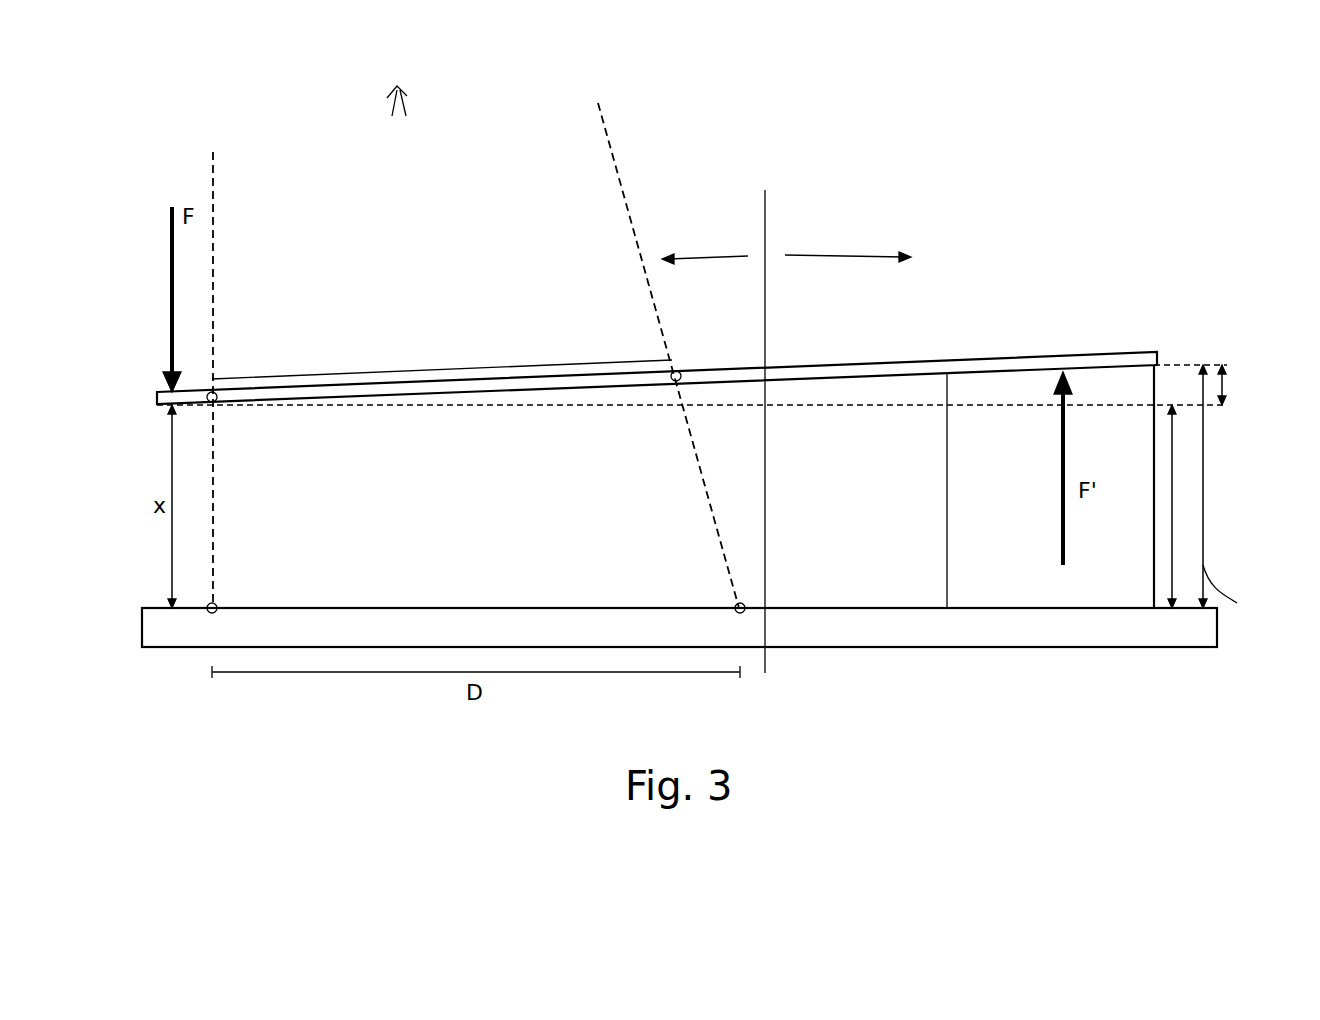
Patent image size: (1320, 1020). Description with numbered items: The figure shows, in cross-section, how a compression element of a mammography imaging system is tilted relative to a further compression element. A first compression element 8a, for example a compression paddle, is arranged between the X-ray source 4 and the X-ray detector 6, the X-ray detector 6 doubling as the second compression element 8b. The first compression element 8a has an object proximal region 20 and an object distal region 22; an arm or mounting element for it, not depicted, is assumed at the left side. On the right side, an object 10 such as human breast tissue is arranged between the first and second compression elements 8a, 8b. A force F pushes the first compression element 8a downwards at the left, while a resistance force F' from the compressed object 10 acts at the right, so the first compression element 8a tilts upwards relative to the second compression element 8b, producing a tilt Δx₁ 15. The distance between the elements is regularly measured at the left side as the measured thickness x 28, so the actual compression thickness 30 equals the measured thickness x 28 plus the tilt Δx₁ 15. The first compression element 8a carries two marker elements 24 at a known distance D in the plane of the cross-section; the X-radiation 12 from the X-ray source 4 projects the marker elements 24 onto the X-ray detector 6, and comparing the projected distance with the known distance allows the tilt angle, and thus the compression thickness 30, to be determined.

The X-ray source 4 is at (397, 116).
The X-ray detector 6 is at (818, 690).
The first compression element 8a is at (400, 390).
The second compression element 8b is at (777, 630).
The object 10 is at (1018, 525).
The X-radiation 12 is at (623, 185).
The tilt Δx₁ 15 is at (1262, 378).
The object proximal region 20 is at (848, 244).
The object distal region 22 is at (705, 245).
The marker elements 24 is at (212, 392).
The measured thickness x 28 is at (201, 380).
The compression thickness 30 is at (1238, 494).